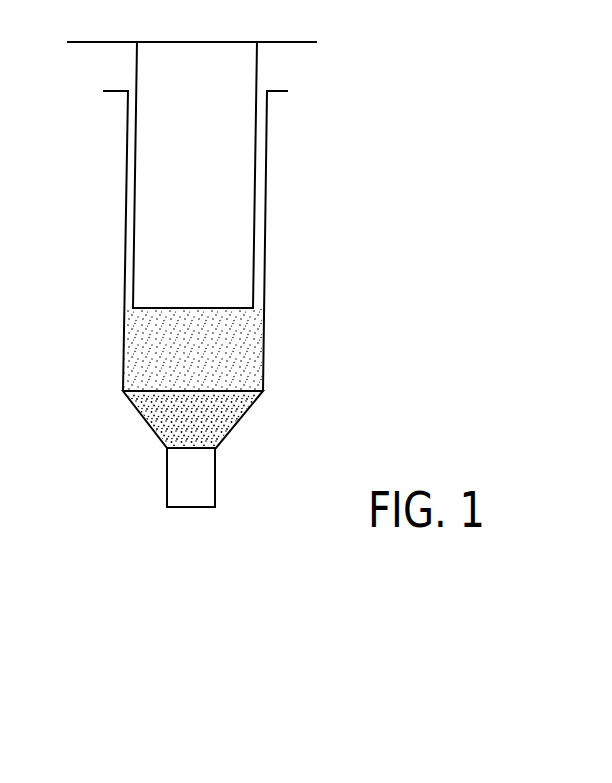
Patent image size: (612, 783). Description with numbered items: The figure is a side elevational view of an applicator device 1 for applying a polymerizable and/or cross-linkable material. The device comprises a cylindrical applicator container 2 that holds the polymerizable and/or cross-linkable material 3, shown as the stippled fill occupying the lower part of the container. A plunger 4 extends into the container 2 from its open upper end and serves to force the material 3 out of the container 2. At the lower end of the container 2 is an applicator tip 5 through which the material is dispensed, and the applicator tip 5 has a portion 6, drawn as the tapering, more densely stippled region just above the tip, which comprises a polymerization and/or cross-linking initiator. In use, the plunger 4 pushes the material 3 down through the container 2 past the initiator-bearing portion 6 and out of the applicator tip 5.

The applicator device 1 is at (332, 198).
The cylindrical applicator container 2 is at (125, 297).
The polymerizable and/or cross-linkable material 3 is at (253, 350).
The plunger 4 is at (240, 42).
The applicator tip 5 is at (215, 450).
The portion of applicator tip 6 is at (227, 413).